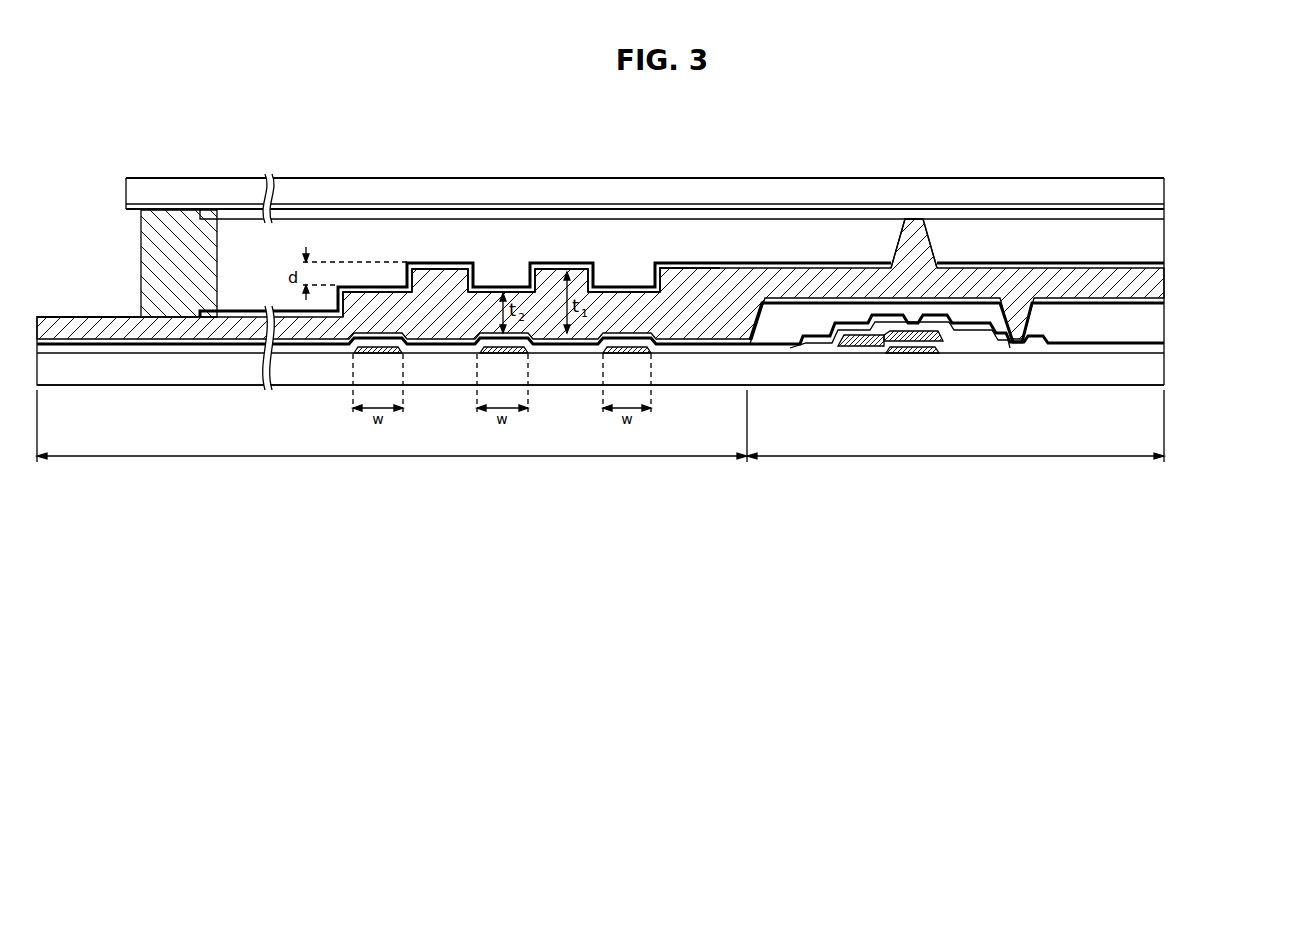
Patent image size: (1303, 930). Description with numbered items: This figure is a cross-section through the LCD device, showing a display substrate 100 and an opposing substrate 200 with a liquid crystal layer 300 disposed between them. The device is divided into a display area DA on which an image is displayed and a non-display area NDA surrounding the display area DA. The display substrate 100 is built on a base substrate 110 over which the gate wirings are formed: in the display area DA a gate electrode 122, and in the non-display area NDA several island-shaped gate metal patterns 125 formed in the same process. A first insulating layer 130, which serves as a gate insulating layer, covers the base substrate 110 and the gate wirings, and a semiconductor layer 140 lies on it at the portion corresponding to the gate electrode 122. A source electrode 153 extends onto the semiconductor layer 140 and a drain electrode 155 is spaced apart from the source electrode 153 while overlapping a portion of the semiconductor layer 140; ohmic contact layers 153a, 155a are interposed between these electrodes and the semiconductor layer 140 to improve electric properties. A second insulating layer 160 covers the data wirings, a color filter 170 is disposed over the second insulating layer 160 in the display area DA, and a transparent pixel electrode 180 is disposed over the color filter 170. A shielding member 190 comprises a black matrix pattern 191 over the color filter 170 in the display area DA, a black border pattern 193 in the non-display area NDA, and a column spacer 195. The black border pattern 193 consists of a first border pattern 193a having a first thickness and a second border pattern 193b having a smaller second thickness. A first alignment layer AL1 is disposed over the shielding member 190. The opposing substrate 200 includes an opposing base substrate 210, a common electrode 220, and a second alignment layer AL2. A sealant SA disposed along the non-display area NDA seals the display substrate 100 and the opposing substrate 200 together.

The display substrate 100 is at (1236, 253).
The base substrate 110 is at (1152, 368).
The gate electrode 122 is at (915, 353).
The gate metal pattern 125 is at (378, 357).
The first insulating layer 130 is at (1152, 349).
The semiconductor layer 140 is at (855, 347).
The source electrode 153 is at (820, 344).
The ohmic contact layer 153a is at (867, 342).
The drain electrode 155 is at (1000, 342).
The ohmic contact layer 155a is at (965, 342).
The second insulating layer 160 is at (1152, 341).
The color filter 170 is at (1152, 316).
The pixel electrode 180 is at (1152, 302).
The shielding member 190 is at (1132, 510).
The black matrix pattern 191 is at (823, 280).
The black border pattern 193 is at (445, 134).
The first border pattern 193a is at (440, 280).
The second border pattern 193b is at (375, 302).
The column spacer 195 is at (915, 236).
The opposing substrate 200 is at (1236, 176).
The opposing base substrate 210 is at (1150, 190).
The common electrode 220 is at (1150, 207).
The liquid crystal layer 300 is at (1152, 242).
The first alignment layer AL1 is at (1152, 264).
The second alignment layer AL2 is at (1150, 214).
The sealant SA is at (157, 266).
The non-display area NDA is at (392, 437).
The display area DA is at (955, 437).